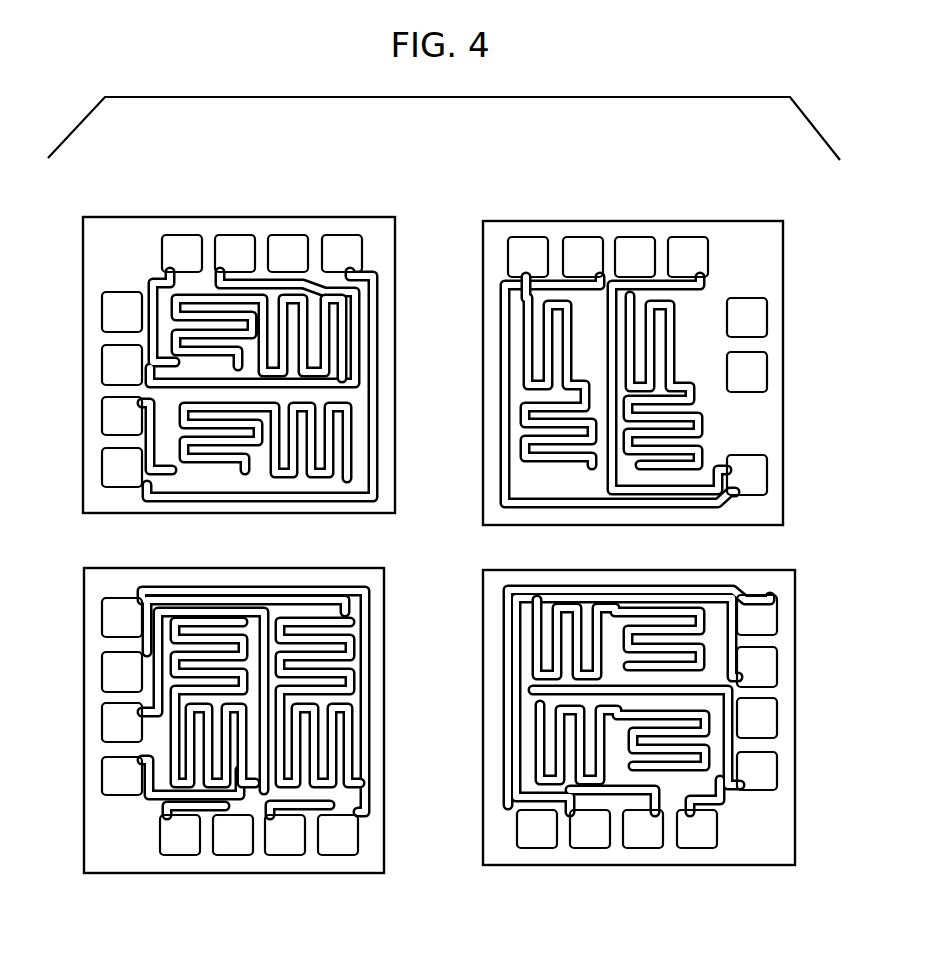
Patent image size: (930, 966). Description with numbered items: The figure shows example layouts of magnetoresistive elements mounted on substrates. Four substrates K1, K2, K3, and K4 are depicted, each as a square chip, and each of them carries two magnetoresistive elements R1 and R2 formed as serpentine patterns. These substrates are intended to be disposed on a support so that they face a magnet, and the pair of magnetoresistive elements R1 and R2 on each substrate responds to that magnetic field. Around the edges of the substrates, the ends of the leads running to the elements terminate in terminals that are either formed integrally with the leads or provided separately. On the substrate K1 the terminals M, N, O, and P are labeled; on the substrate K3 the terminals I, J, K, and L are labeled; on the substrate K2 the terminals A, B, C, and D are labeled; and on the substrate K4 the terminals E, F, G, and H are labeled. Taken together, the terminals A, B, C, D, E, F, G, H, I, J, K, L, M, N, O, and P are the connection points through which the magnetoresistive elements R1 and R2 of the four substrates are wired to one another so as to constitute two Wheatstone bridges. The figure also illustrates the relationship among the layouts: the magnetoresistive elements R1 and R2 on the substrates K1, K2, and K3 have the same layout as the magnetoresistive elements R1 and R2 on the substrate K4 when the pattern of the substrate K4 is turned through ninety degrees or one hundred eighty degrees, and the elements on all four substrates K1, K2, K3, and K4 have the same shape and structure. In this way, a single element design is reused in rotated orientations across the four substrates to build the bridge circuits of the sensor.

The substrate K1 is at (360, 217).
The substrate K2 is at (360, 876).
The substrate K3 is at (737, 217).
The substrate K4 is at (736, 868).
The magnetoresistive element R1 is at (330, 336).
The magnetoresistive element R2 is at (340, 440).
The terminal A is at (115, 620).
The terminal B is at (115, 717).
The terminal C is at (180, 845).
The terminal D is at (285, 845).
The terminal E is at (540, 845).
The terminal F is at (645, 845).
The terminal G is at (760, 770).
The terminal H is at (765, 667).
The terminal I is at (760, 473).
The terminal J is at (760, 373).
The terminal K is at (690, 250).
The terminal L is at (580, 250).
The terminal M is at (337, 248).
The terminal N is at (237, 248).
The terminal O is at (115, 317).
The terminal P is at (115, 412).